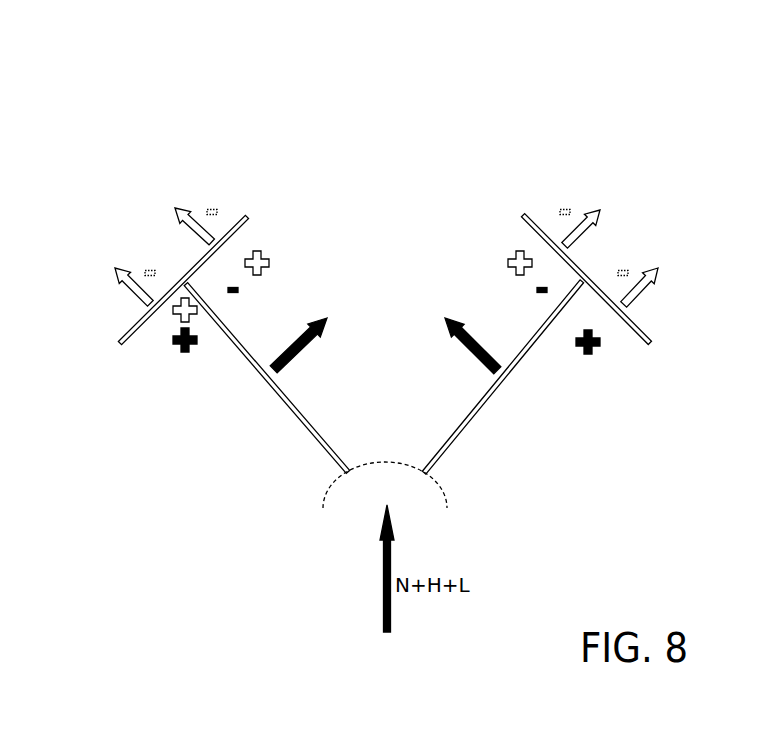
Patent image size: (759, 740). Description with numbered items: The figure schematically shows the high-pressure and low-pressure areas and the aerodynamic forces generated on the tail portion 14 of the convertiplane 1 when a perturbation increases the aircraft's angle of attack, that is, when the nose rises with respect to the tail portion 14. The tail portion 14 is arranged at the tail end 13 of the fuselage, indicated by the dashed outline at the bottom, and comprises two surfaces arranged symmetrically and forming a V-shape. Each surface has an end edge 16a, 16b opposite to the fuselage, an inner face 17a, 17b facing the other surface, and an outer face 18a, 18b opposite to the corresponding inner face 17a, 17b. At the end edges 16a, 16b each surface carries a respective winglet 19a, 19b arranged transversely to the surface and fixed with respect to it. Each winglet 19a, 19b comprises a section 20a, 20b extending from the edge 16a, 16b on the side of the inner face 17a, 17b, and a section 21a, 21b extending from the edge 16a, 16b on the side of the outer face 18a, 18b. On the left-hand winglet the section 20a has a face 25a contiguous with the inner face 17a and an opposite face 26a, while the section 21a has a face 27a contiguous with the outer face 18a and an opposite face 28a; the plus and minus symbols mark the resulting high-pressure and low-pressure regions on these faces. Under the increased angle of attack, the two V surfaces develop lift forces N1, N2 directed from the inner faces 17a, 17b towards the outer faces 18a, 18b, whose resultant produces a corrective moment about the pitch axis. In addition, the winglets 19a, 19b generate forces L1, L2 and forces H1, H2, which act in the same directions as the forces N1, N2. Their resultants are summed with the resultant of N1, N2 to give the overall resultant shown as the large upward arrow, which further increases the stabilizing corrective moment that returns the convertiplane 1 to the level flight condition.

The convertiplane 1 is at (380, 192).
The tail end of the fuselage 13 is at (400, 490).
The tail portion 14 is at (397, 230).
The end edge of first surface 16a is at (183, 277).
The end edge of second surface 16b is at (590, 277).
The inner face of first surface 17a is at (312, 417).
The inner face of second surface 17b is at (483, 387).
The outer face of first surface 18a is at (260, 382).
The outer face of second surface 18b is at (525, 367).
The first winglet 19a is at (167, 240).
The second winglet 19b is at (630, 200).
The first section of first winglet 20a is at (255, 235).
The first section of second winglet 20b is at (530, 235).
The second section of first winglet 21a is at (160, 320).
The second section of second winglet 21b is at (627, 342).
The face of first winglet section 25a is at (222, 263).
The opposite face of first winglet section 26a is at (236, 222).
The face of second winglet section 27a is at (128, 348).
The opposite face of second winglet section 28a is at (162, 290).
The first winglet force H1 is at (184, 203).
The second winglet force H2 is at (585, 213).
The first winglet force L1 is at (130, 288).
The second winglet force L2 is at (653, 287).
The lift force of first surface N1 is at (295, 345).
The lift force of second surface N2 is at (482, 343).